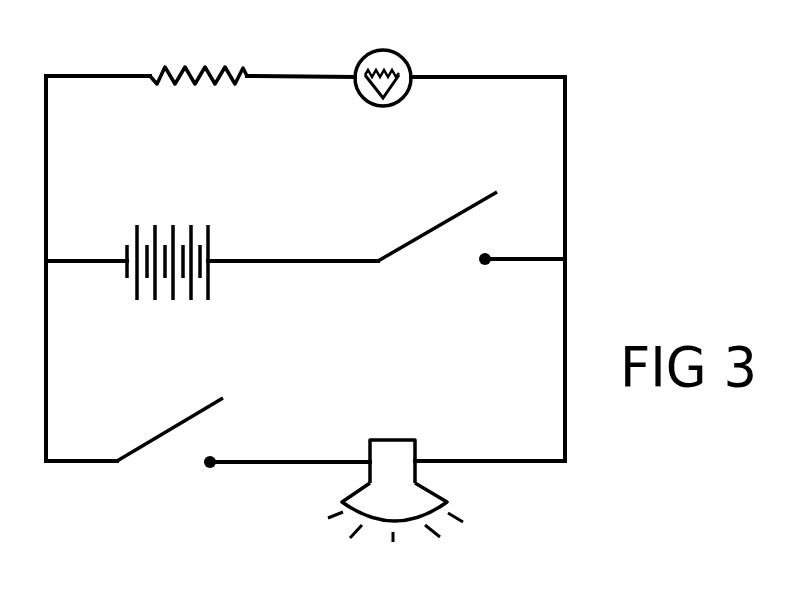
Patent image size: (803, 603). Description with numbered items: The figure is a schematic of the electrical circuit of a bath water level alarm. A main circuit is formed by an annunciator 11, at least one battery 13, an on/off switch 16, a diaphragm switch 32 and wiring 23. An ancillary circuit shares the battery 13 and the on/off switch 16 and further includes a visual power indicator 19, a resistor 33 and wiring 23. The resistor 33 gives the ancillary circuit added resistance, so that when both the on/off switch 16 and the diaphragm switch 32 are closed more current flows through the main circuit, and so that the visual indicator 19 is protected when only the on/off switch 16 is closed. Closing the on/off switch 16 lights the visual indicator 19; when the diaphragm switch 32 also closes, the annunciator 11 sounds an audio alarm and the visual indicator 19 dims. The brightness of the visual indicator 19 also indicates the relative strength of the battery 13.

The annunciator 11 is at (393, 450).
The battery 13 is at (138, 225).
The on/off switch 16 is at (442, 220).
The visual power indicator 19 is at (390, 63).
The wiring 23 is at (565, 197).
The diaphragm switch 32 is at (178, 423).
The resistor 33 is at (190, 68).